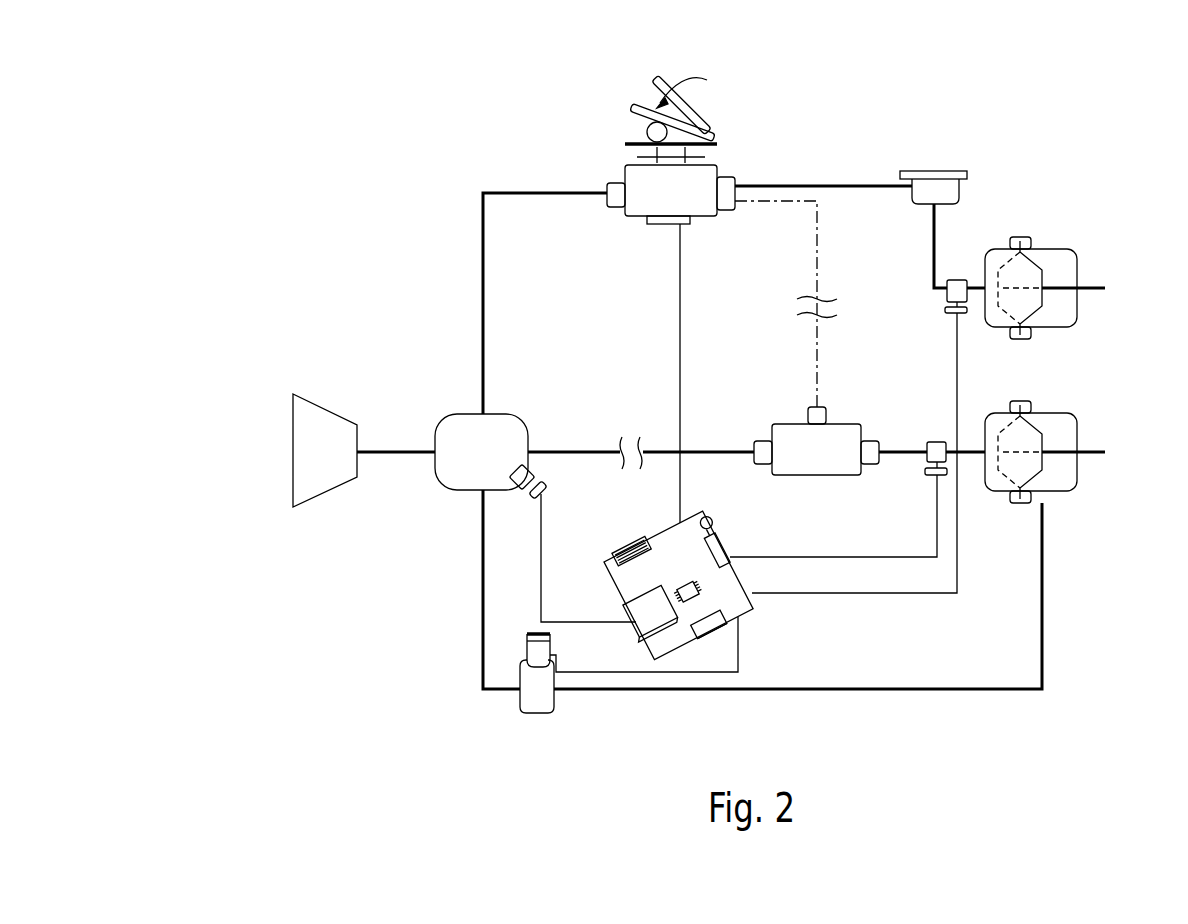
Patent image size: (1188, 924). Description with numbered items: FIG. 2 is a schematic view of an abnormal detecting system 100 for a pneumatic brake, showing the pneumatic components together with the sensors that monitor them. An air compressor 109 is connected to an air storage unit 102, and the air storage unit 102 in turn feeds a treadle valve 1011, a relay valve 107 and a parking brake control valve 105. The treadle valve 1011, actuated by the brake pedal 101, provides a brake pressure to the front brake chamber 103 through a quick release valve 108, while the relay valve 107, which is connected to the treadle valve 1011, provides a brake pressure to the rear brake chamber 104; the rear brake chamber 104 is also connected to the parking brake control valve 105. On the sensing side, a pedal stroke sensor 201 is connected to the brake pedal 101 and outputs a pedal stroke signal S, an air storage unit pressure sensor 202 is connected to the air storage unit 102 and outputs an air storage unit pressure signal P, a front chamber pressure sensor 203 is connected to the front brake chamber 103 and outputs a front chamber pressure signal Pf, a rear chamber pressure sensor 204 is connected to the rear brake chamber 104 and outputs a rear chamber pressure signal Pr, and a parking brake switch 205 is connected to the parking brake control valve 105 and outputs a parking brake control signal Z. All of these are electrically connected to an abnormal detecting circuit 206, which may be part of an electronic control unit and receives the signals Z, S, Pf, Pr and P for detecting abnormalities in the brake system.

The abnormal detecting system 100 is at (230, 96).
The brake pedal 101 is at (643, 108).
The treadle valve 1011 is at (625, 172).
The pedal stroke sensor 201 is at (703, 152).
The air storage unit 102 is at (462, 414).
The front brake chamber 103 is at (1078, 272).
The rear brake chamber 104 is at (1078, 436).
The parking brake control valve 105 is at (523, 700).
The relay valve 107 is at (848, 424).
The quick release valve 108 is at (934, 171).
The air compressor 109 is at (326, 410).
The air storage unit pressure sensor 202 is at (522, 490).
The front chamber pressure sensor 203 is at (957, 278).
The rear chamber pressure sensor 204 is at (936, 442).
The parking brake switch 205 is at (528, 650).
The abnormal detecting circuit 206 is at (737, 604).